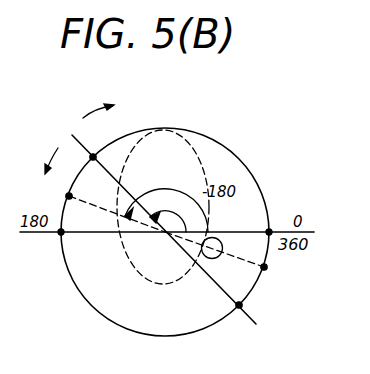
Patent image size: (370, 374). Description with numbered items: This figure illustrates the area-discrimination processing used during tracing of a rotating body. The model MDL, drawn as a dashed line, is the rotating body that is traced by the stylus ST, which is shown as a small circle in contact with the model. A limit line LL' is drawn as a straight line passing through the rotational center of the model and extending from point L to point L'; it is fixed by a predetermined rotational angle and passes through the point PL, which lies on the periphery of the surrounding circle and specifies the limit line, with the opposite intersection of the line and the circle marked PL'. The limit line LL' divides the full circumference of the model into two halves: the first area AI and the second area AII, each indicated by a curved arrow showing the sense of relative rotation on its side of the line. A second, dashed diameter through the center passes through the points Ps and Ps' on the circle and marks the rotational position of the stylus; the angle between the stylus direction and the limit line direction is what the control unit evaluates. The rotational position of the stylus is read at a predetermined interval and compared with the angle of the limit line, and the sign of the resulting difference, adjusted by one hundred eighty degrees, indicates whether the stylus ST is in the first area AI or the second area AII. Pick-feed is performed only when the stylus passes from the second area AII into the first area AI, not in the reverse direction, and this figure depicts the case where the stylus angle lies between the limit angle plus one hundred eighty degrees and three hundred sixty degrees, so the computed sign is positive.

The first area AI is at (103, 99).
The second area AII is at (35, 163).
The limit line end point L is at (156, 219).
The limit line end point L' is at (267, 330).
The limit line specifying point PL is at (95, 143).
The point PL' on line L PL' is at (256, 302).
The point Ps is at (216, 251).
The point Ps' is at (107, 199).
The model MDL is at (143, 266).
The stylus ST is at (210, 260).